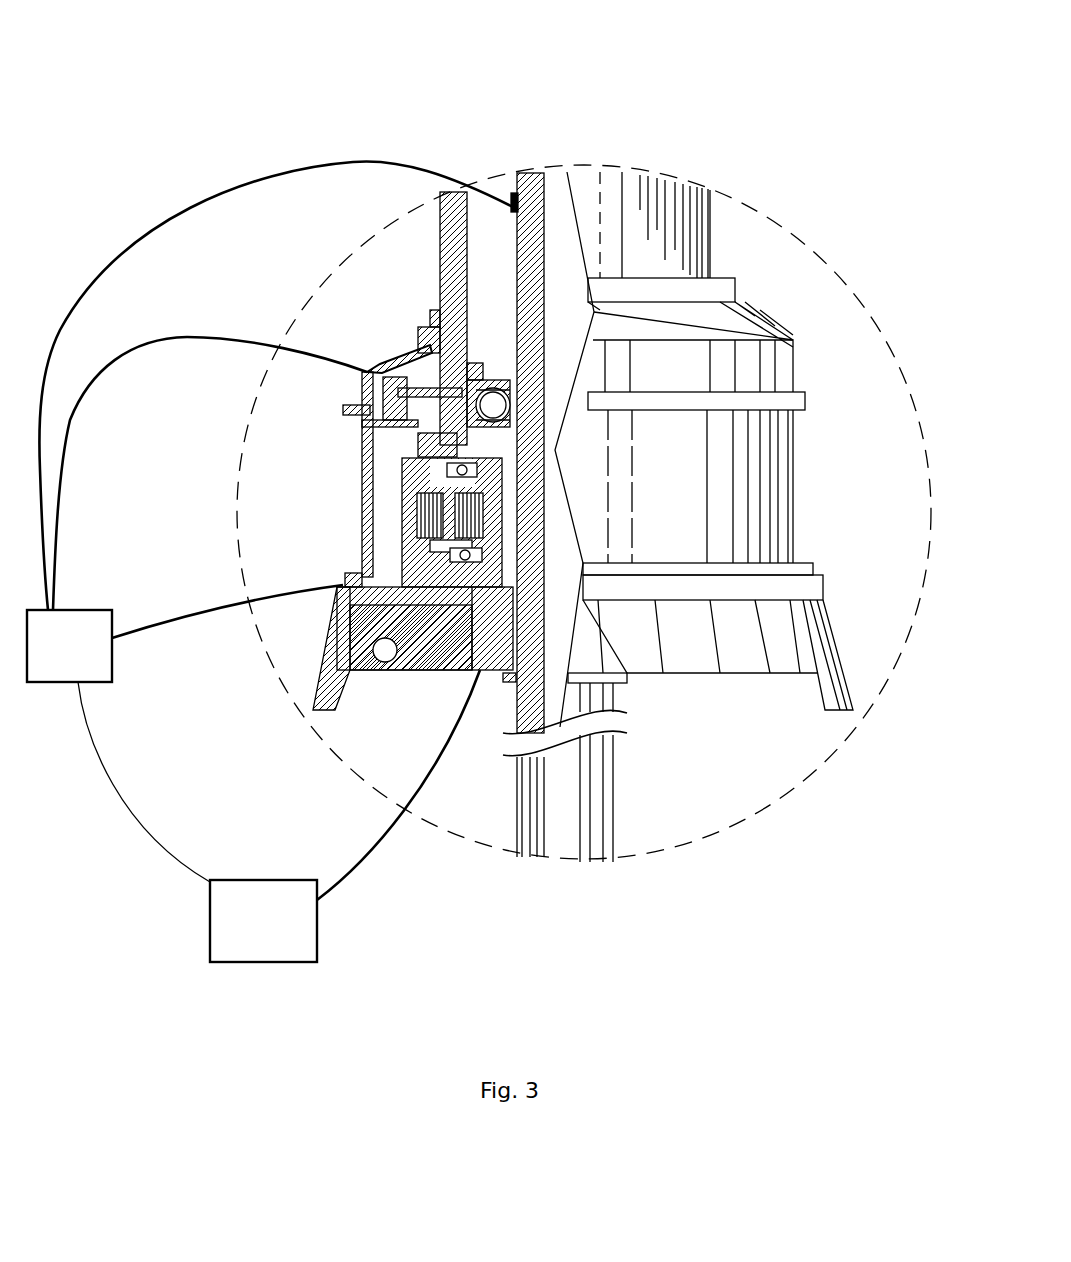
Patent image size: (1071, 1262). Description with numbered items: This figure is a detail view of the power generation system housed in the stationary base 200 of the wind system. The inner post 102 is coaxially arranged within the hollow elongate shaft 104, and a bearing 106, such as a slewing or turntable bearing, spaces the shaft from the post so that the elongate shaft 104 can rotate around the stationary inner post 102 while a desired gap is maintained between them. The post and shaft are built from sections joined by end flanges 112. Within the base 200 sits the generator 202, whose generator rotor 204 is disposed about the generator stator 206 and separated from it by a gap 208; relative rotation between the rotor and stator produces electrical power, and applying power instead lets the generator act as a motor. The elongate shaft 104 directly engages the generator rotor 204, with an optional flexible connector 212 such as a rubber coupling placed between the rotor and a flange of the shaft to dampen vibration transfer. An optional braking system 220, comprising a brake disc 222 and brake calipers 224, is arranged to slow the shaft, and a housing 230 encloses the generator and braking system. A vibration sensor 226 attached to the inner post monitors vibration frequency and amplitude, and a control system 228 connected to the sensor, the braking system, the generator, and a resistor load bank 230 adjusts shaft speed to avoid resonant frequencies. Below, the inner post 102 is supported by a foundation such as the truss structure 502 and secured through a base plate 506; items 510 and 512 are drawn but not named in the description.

The stationary base 200 is at (275, 93).
The inner post 102 is at (627, 713).
The elongate shaft 104 is at (440, 228).
The bearing 106 is at (493, 385).
The end flange 112 is at (507, 683).
The generator 202 is at (327, 567).
The generator rotor 204 is at (468, 510).
The generator stator 206 is at (440, 505).
The gap 208 is at (450, 550).
The flexible connector 212 is at (370, 430).
The braking system 220 is at (415, 360).
The brake disc 222 is at (365, 350).
The brake calipers 224 is at (368, 392).
The vibration sensor 226 is at (505, 205).
The control system 228 is at (60, 663).
The housing 230 is at (425, 447).
The truss structure 502 is at (322, 655).
The base plate 506 is at (343, 600).
The support 510 is at (380, 673).
The bearing block 512 is at (315, 693).